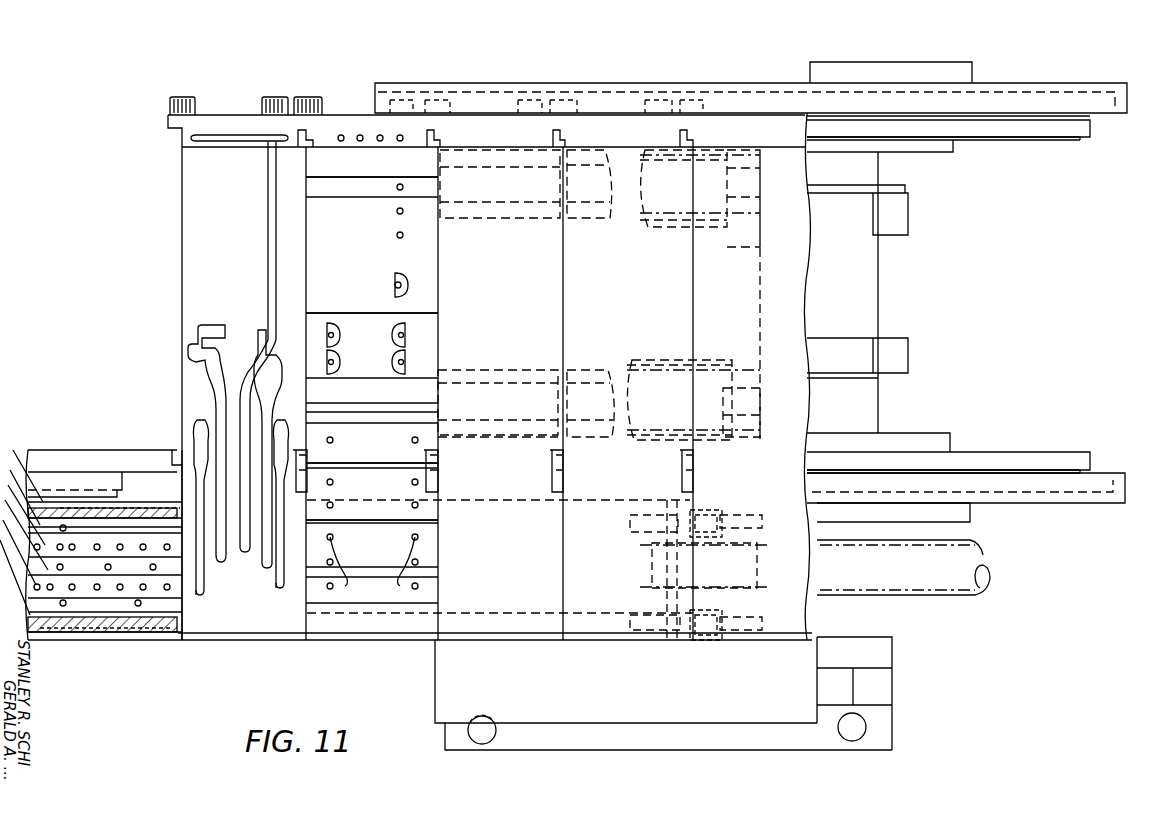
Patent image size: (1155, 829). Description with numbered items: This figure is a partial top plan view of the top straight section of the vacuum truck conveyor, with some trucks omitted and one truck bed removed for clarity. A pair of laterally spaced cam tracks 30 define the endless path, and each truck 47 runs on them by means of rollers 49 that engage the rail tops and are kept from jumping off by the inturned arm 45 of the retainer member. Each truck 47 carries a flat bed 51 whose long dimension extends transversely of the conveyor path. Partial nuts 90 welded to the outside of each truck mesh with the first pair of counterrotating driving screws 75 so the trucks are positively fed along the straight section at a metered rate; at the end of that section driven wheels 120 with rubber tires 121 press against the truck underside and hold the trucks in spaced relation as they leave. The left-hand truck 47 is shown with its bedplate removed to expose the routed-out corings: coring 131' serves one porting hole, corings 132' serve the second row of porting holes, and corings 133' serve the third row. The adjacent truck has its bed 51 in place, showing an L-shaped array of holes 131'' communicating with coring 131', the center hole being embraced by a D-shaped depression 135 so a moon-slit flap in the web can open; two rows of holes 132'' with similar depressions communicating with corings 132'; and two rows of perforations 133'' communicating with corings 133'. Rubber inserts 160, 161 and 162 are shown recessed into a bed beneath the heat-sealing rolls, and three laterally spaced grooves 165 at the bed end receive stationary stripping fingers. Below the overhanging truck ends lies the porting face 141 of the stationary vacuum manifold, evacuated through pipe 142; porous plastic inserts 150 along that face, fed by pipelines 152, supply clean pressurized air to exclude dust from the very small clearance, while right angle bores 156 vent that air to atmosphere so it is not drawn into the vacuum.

The cam track 30 is at (1103, 118).
The inturned arm 45 is at (380, 103).
The truck 47 is at (176, 237).
The roller 49 is at (272, 97).
The bed 51 is at (356, 266).
The driving screw 75 is at (658, 215).
The partial nut 90 is at (590, 195).
The driven wheel 120 is at (1062, 140).
The rubber tire 121 is at (975, 128).
The coring 131' is at (239, 237).
The holes 131'' is at (368, 189).
The coring 132' is at (238, 442).
The holes 132'' is at (366, 348).
The coring 133' is at (211, 542).
The perforations 133'' is at (372, 568).
The D-shaped depression 135 is at (405, 275).
The porting face 141 is at (90, 524).
The pipe 142 is at (945, 582).
The porous plastic insert 150 is at (147, 505).
The pipeline 152 is at (738, 515).
The right angle bore 156 is at (66, 500).
The rubber insert 160 is at (355, 188).
The rubber insert 161 is at (430, 335).
The rubber insert 162 is at (432, 437).
The groove 165 is at (388, 462).